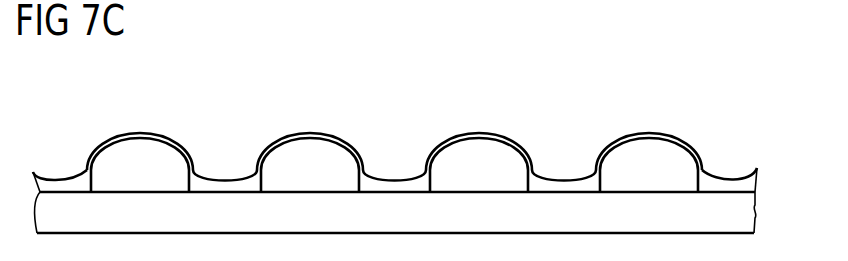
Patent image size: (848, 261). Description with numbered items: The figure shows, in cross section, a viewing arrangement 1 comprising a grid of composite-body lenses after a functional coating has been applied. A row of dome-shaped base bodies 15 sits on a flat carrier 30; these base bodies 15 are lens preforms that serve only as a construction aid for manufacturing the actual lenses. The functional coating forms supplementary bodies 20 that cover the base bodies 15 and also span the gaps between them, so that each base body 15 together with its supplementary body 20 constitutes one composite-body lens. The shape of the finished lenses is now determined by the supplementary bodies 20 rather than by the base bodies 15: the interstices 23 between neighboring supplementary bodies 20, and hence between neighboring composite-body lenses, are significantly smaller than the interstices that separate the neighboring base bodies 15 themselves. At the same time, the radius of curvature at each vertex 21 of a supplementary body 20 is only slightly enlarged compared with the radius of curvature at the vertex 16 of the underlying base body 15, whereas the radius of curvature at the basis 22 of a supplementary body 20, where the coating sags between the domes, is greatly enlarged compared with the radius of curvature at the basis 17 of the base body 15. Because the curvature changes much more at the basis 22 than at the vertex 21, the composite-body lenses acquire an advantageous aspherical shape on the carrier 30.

The viewing arrangement 1 is at (78, 115).
The base body 15 is at (651, 157).
The vertex of the base body 16 is at (141, 133).
The basis of the base body 17 is at (84, 183).
The supplementary body 20 is at (710, 185).
The vertex of the supplementary body 21 is at (308, 132).
The basis of the supplementary body 22 is at (248, 165).
The interstice between neighboring supplementary bodies 23 is at (568, 153).
The carrier 30 is at (752, 212).